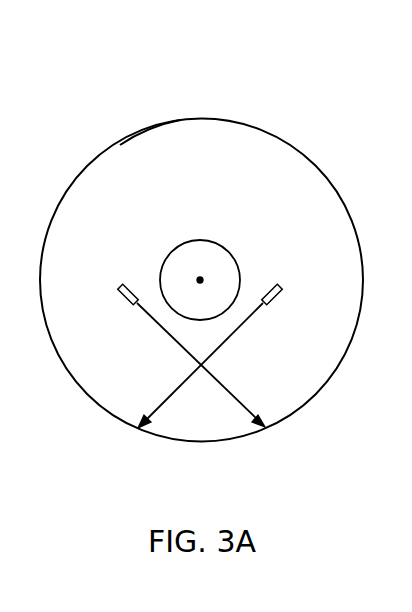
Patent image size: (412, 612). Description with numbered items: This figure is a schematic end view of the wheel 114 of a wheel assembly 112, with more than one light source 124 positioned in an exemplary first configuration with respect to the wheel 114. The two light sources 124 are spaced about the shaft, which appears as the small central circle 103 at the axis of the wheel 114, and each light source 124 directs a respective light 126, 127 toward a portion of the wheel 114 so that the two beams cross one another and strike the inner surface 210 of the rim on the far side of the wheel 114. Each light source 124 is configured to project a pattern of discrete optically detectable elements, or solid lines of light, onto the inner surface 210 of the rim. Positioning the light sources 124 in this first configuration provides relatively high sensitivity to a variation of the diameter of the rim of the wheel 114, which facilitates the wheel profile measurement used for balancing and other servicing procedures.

The wheel assembly 112 is at (121, 81).
The wheel 114 is at (286, 141).
The inner surface of rim 210 is at (147, 128).
The optical axis 103 is at (203, 278).
The light source 124 is at (122, 284).
The light 126 is at (247, 322).
The light beam 127 is at (165, 330).